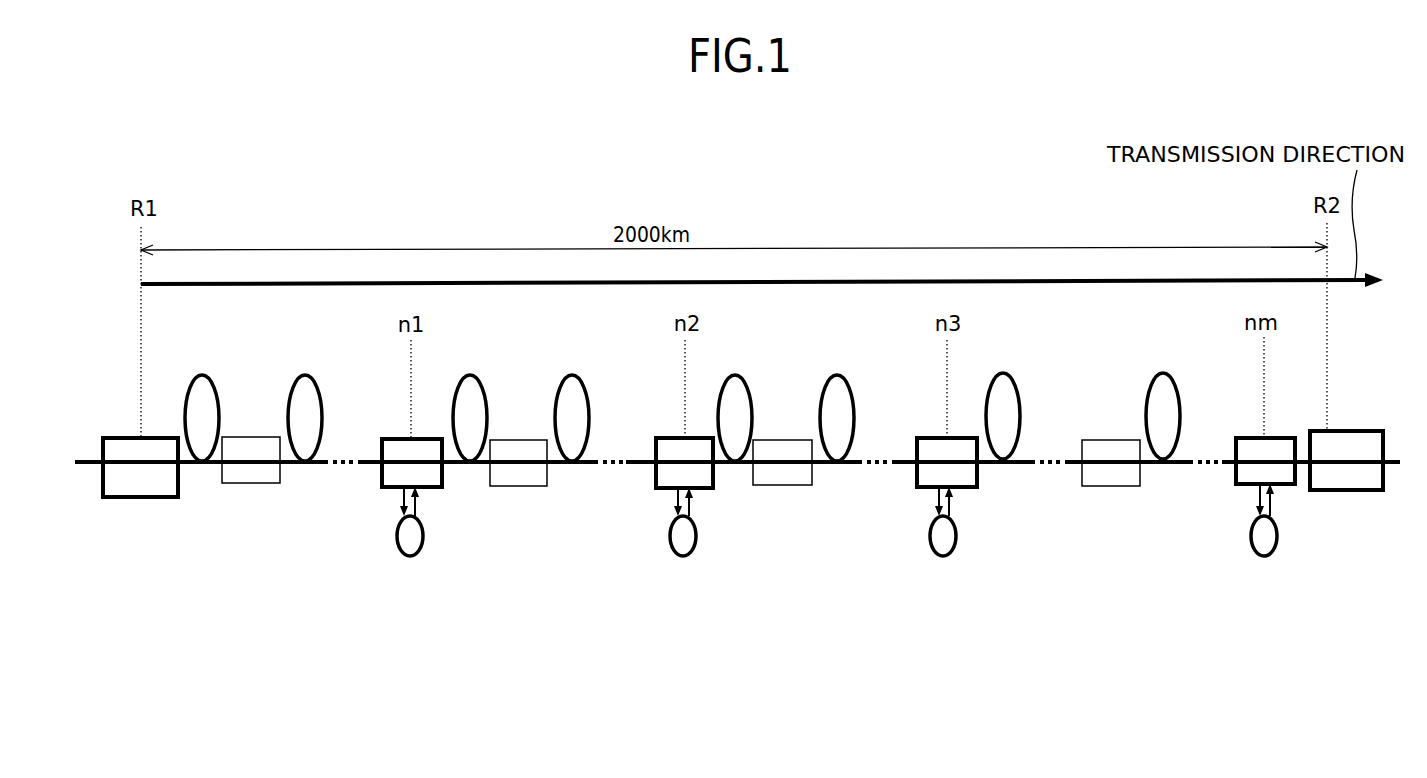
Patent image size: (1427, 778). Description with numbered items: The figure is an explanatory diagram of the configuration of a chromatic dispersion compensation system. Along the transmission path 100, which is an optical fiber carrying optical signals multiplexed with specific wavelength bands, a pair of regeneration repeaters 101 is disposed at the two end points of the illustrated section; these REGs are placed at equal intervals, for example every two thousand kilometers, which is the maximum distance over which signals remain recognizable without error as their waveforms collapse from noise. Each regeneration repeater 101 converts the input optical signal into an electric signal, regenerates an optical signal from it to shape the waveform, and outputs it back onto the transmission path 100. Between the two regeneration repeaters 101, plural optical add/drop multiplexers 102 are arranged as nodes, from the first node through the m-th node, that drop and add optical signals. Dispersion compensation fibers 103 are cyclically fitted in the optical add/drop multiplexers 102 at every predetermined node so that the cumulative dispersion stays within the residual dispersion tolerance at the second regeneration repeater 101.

The transmission path 100 is at (88, 464).
The regeneration repeater 101 is at (132, 438).
The optical add/drop multiplexer 102 is at (253, 484).
The dispersion compensation fiber 103 is at (423, 537).